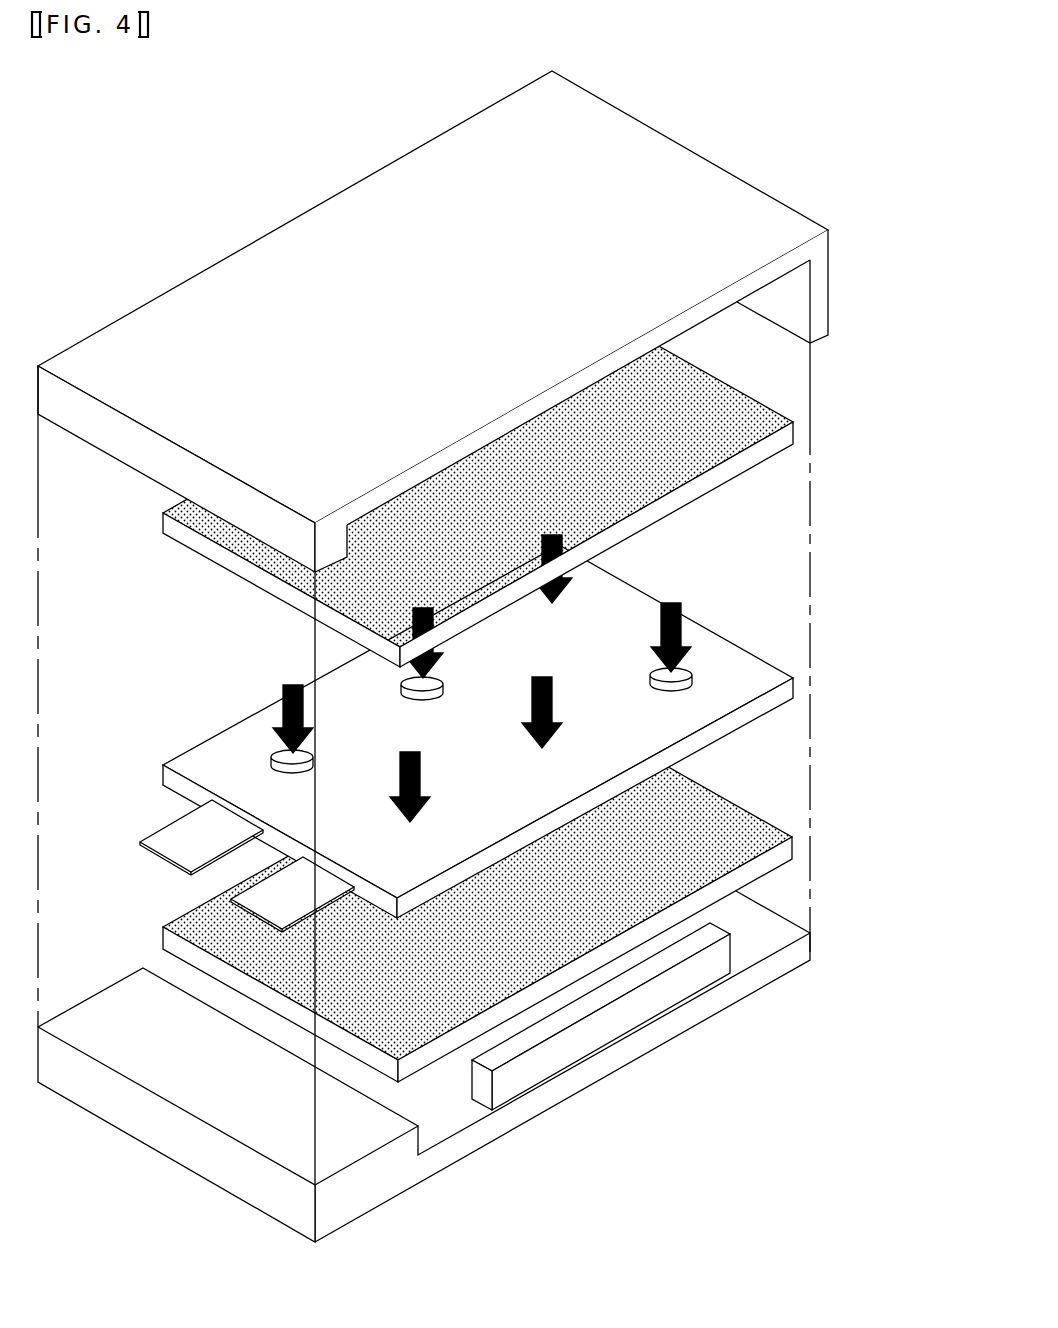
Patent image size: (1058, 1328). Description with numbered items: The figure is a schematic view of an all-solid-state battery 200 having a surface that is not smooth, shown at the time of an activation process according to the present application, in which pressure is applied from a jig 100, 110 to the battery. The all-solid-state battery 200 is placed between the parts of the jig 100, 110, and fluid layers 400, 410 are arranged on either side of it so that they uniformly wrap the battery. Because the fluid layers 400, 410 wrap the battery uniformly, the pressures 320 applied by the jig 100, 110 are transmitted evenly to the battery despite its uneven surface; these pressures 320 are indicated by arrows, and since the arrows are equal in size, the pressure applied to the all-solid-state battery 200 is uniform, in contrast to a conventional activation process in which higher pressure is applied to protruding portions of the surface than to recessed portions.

The jig 100 is at (340, 228).
The jig 110 is at (190, 1134).
The all-solid-state battery 200 is at (204, 747).
The pressure applied by jig 320 is at (280, 690).
The fluid layer 400 is at (697, 413).
The fluid layer 410 is at (705, 812).